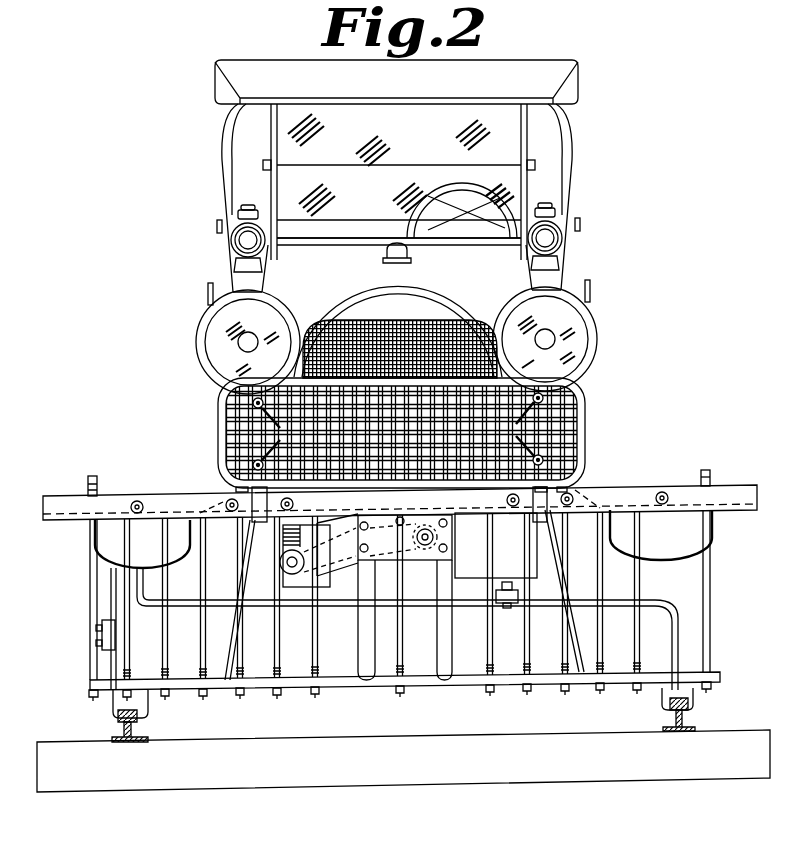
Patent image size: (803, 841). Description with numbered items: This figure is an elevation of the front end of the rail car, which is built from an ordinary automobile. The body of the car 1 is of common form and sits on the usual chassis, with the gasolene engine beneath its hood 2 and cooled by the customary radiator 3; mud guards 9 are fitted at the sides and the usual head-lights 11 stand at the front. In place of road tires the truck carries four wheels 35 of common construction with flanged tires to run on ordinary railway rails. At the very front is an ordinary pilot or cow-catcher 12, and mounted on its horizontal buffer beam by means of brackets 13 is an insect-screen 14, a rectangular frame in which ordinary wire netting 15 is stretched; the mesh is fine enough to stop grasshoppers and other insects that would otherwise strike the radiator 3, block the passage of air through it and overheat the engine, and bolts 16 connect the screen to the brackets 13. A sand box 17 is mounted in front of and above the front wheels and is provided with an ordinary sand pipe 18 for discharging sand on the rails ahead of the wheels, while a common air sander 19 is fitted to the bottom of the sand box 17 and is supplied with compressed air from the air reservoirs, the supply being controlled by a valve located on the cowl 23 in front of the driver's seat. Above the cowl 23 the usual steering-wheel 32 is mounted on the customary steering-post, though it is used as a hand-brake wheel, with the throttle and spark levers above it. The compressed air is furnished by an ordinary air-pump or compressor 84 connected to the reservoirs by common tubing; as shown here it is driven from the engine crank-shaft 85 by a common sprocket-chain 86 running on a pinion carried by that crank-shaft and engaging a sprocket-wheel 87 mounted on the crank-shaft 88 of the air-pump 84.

The body of the car 1 is at (550, 282).
The hood 2 is at (474, 291).
The radiator 3 is at (400, 328).
The mud guards 9 is at (107, 536).
The head-lights 11 is at (218, 344).
The pilot or cow-catcher 12 is at (634, 492).
The brackets 13 is at (240, 492).
The insect-screen 14 is at (578, 401).
The wire netting 15 is at (243, 417).
The bolts 16 is at (222, 452).
The sand box 17 is at (496, 545).
The sand pipe 18 is at (122, 659).
The air sander 19 is at (504, 607).
The cowl 23 is at (399, 249).
The steering-wheel 32 is at (450, 188).
The wheels 35 is at (117, 583).
The air-pump or compressor 84 is at (287, 532).
The engine crank-shaft 85 is at (437, 538).
The sprocket-chain 86 is at (345, 574).
The sprocket-wheel 87 is at (308, 550).
The crank-shaft of the air-pump 88 is at (290, 563).